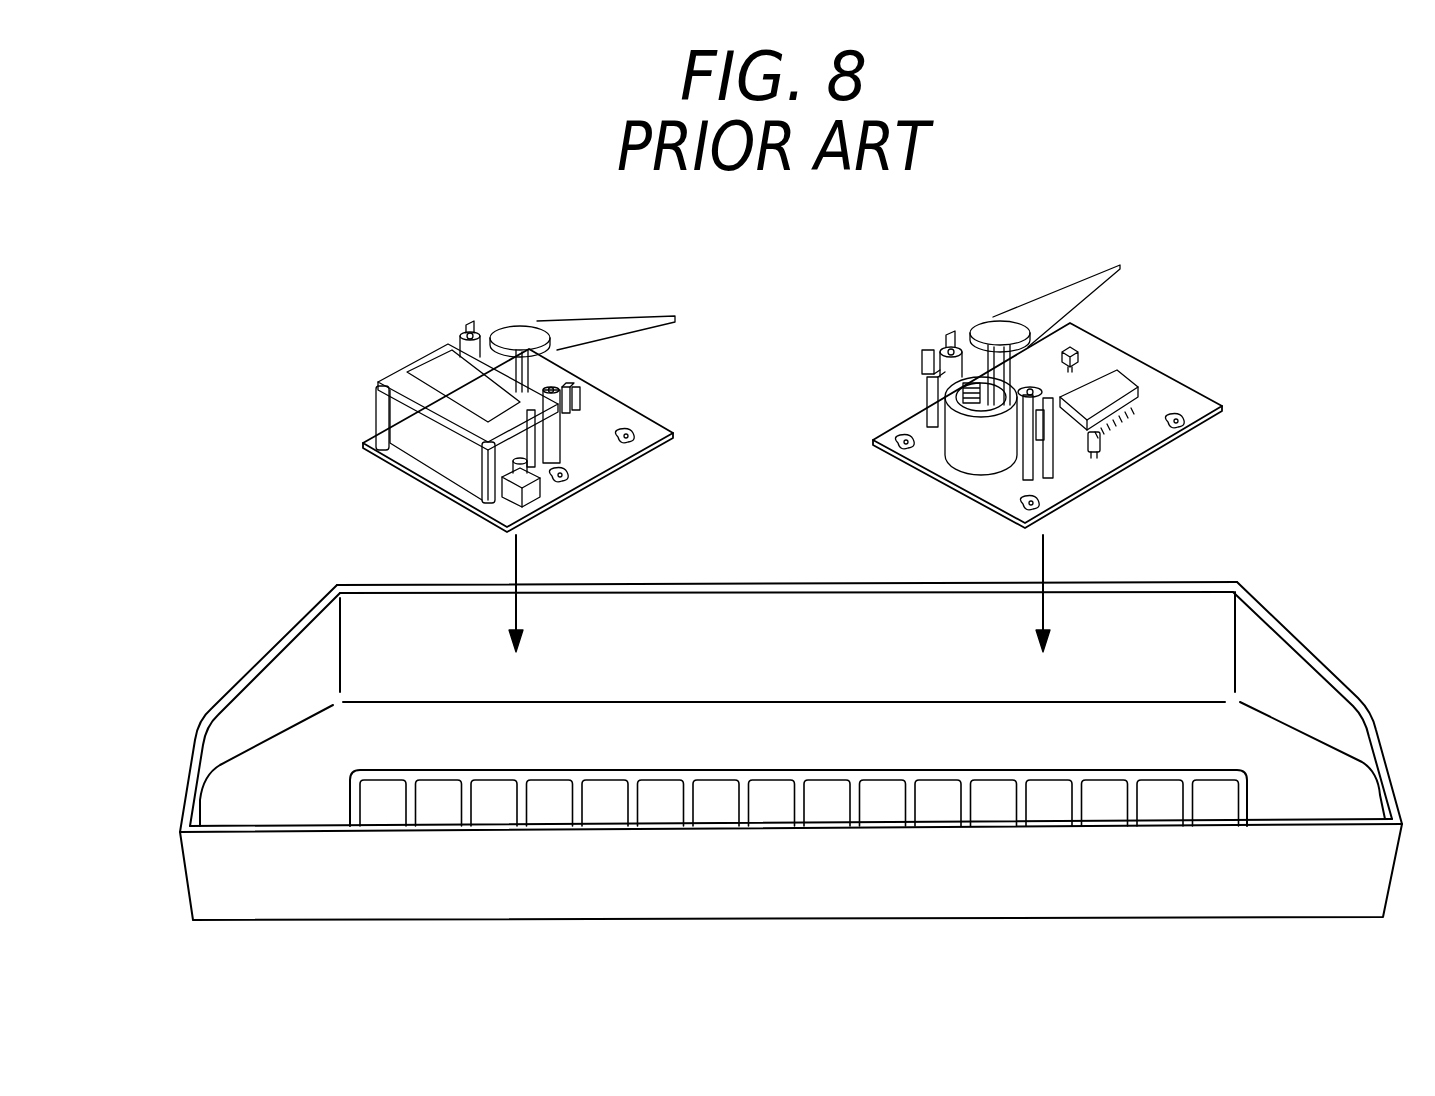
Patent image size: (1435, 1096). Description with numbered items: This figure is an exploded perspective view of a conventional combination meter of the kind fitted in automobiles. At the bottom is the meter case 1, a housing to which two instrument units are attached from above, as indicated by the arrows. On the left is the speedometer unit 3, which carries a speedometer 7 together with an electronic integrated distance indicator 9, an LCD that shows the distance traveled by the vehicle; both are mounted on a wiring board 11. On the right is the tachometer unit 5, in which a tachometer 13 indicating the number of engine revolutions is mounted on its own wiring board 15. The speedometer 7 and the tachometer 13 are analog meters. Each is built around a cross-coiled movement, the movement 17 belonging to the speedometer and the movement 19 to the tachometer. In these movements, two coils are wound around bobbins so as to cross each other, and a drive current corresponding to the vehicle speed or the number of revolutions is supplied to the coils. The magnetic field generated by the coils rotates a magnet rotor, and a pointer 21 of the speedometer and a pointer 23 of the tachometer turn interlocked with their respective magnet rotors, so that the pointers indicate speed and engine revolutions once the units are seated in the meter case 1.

The meter case 1 is at (720, 580).
The speedometer unit 3 is at (554, 386).
The tachometer unit 5 is at (1029, 360).
The speedometer 7 is at (517, 328).
The electronic integrated distance indicator 9 is at (423, 367).
The wiring board 11 is at (665, 428).
The tachometer 13 is at (995, 326).
The wiring board 15 is at (1172, 440).
The cross-coiled movement 17 is at (563, 368).
The cross-coiled movement 19 is at (935, 390).
The pointer 21 is at (586, 318).
The pointer 23 is at (1060, 297).